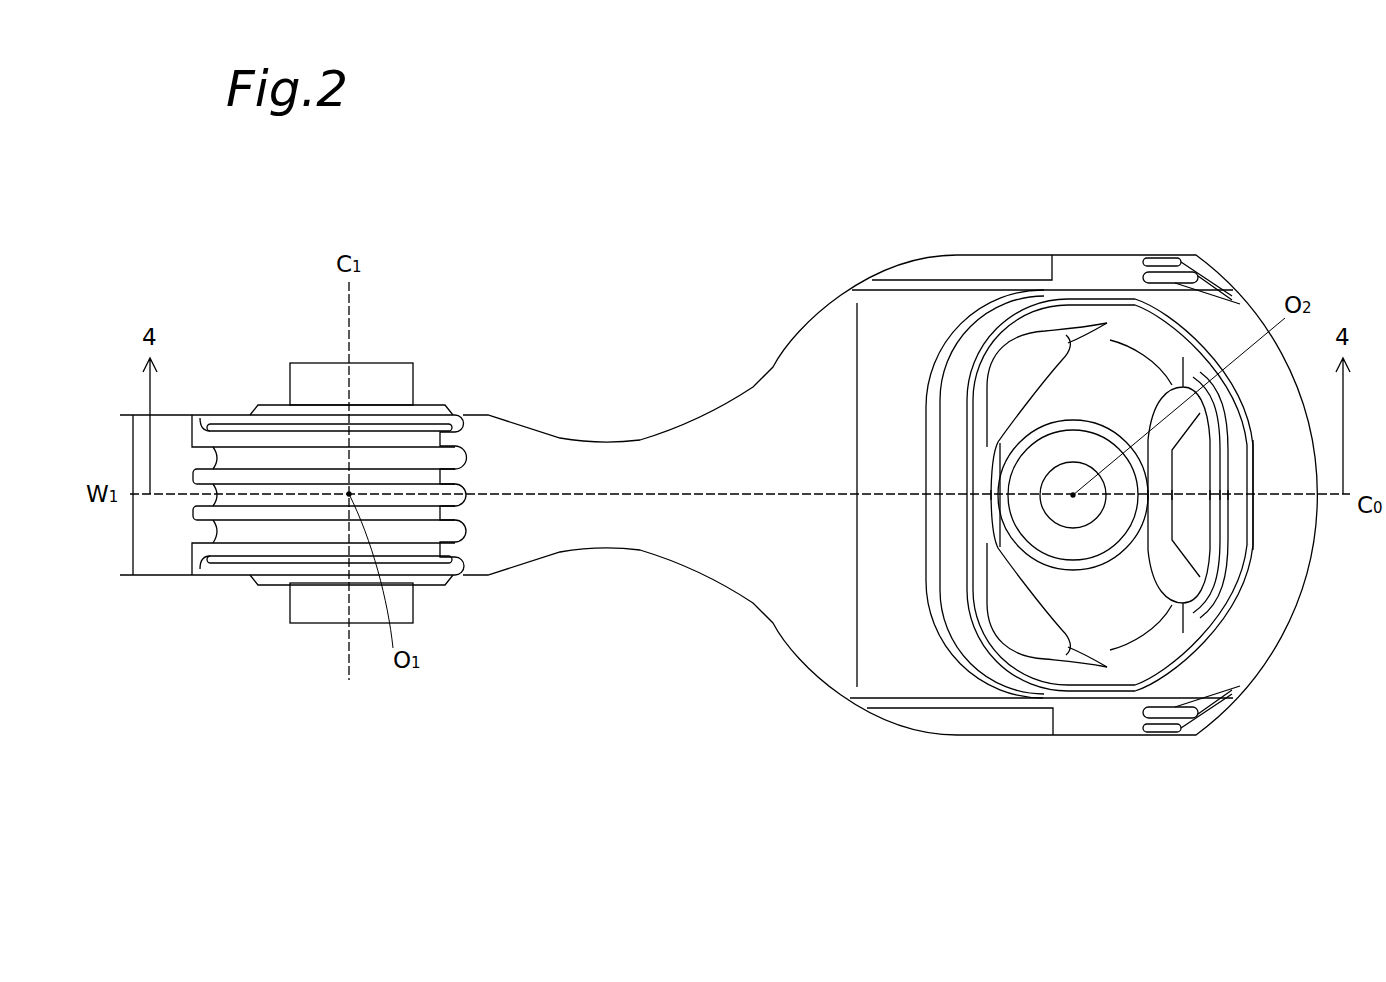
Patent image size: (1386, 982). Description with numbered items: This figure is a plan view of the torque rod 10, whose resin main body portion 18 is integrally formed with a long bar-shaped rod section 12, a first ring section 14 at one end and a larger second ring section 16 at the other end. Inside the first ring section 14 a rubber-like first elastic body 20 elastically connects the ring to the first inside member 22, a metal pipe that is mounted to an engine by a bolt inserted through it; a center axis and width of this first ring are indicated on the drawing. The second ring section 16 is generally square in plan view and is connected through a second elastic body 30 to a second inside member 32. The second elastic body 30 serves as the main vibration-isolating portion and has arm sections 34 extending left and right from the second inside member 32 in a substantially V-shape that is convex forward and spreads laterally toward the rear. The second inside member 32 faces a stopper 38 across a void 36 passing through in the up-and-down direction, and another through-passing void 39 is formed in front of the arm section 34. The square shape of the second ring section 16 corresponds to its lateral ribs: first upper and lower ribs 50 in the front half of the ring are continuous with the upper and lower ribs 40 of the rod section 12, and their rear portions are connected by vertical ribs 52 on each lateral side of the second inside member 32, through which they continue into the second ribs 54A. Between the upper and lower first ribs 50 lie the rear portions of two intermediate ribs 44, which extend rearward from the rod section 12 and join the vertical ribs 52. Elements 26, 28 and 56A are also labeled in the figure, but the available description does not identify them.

The torque rod 10 is at (633, 232).
The rod section 12 is at (595, 430).
The first ring section 14 is at (470, 388).
The second ring section 16 is at (826, 272).
The main body portion 18 is at (548, 358).
The first elastic body 20 is at (432, 400).
The first inside member 22 is at (395, 363).
The ribs 26 is at (262, 488).
The grooves 28 is at (197, 472).
The second elastic body 30 is at (1005, 320).
The second inside member 32 is at (1075, 450).
The arm sections 34 is at (1125, 390).
The void 36 is at (1193, 587).
The stopper 38 is at (1253, 500).
The void 39 is at (1025, 630).
The upper and lower ribs 40 is at (697, 440).
The intermediate ribs 44 is at (917, 236).
The first ribs 50 is at (884, 300).
The vertical ribs 52 is at (1050, 262).
The second ribs 54A is at (1203, 277).
The groove 56A is at (1165, 262).